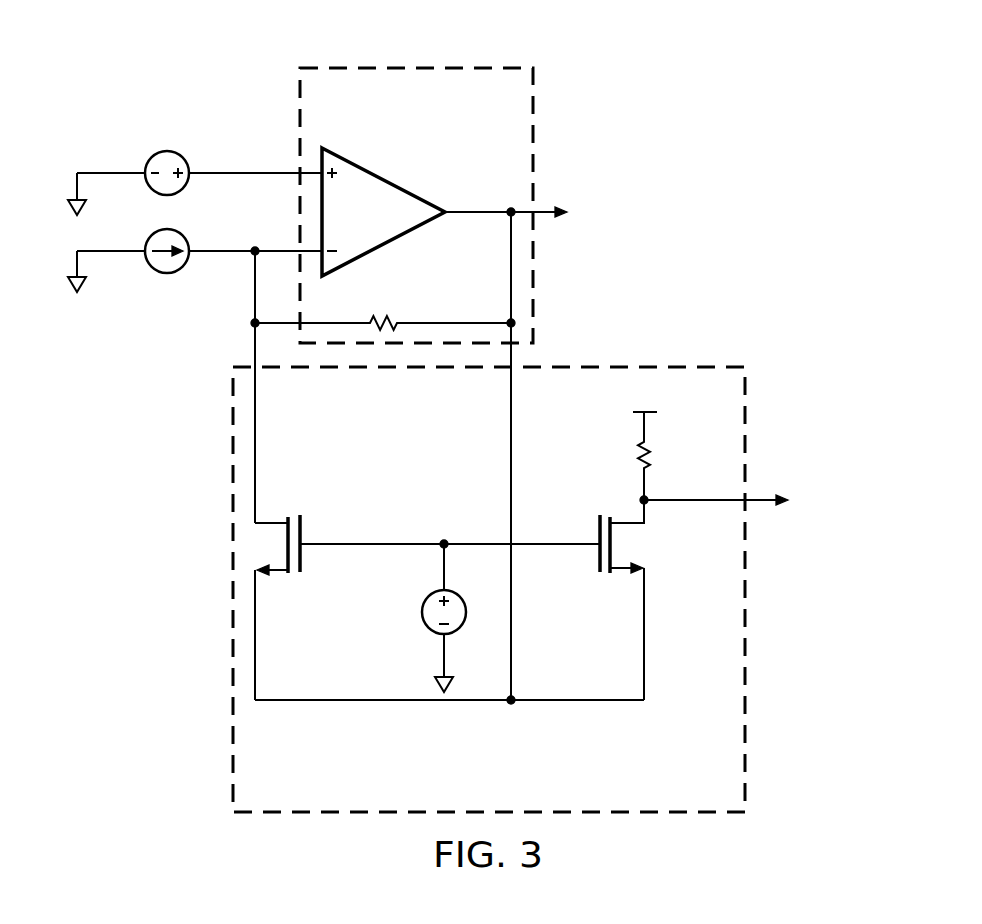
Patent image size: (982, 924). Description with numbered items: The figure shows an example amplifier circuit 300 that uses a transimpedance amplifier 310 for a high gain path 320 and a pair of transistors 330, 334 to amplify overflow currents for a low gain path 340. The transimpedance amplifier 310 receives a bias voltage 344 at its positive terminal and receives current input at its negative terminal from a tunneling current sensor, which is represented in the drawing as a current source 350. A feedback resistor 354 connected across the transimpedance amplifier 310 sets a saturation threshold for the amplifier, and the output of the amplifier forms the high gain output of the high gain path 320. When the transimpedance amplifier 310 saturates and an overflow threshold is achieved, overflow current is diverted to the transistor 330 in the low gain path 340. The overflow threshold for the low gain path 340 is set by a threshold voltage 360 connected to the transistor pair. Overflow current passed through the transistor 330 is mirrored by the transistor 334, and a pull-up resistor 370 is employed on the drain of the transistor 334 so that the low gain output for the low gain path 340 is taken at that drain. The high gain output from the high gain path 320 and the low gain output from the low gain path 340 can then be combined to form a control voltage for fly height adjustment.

The amplifier circuit 300 is at (806, 107).
The transimpedance amplifier 310 is at (378, 177).
The high gain path 320 is at (462, 57).
The transistor 330 is at (303, 533).
The transistor 334 is at (598, 535).
The low gain path 340 is at (691, 820).
The bias voltage 344 is at (188, 182).
The current source 350 is at (147, 235).
The feedback resistor 354 is at (385, 313).
The threshold voltage 360 is at (425, 627).
The pull-up resistor 370 is at (648, 460).